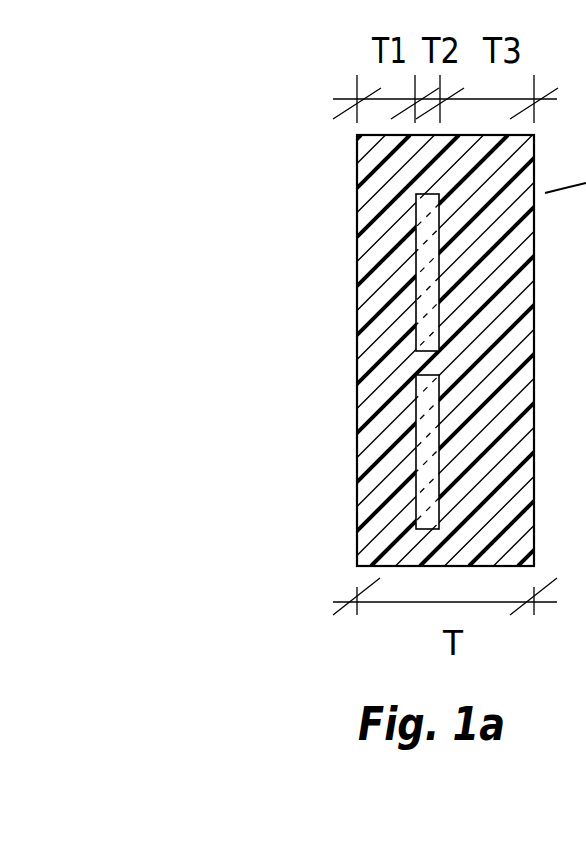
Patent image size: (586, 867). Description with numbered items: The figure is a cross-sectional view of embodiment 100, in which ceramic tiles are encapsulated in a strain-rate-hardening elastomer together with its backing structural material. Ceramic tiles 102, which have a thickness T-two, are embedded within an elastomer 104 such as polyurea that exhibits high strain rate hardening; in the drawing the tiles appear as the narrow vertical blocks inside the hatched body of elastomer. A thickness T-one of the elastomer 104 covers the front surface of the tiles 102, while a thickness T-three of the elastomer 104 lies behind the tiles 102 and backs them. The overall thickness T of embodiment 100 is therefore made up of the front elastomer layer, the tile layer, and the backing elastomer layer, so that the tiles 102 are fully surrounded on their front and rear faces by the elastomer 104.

The embodiment 100 is at (450, 182).
The ceramic tiles 102 is at (428, 268).
The elastomer 104 is at (413, 552).